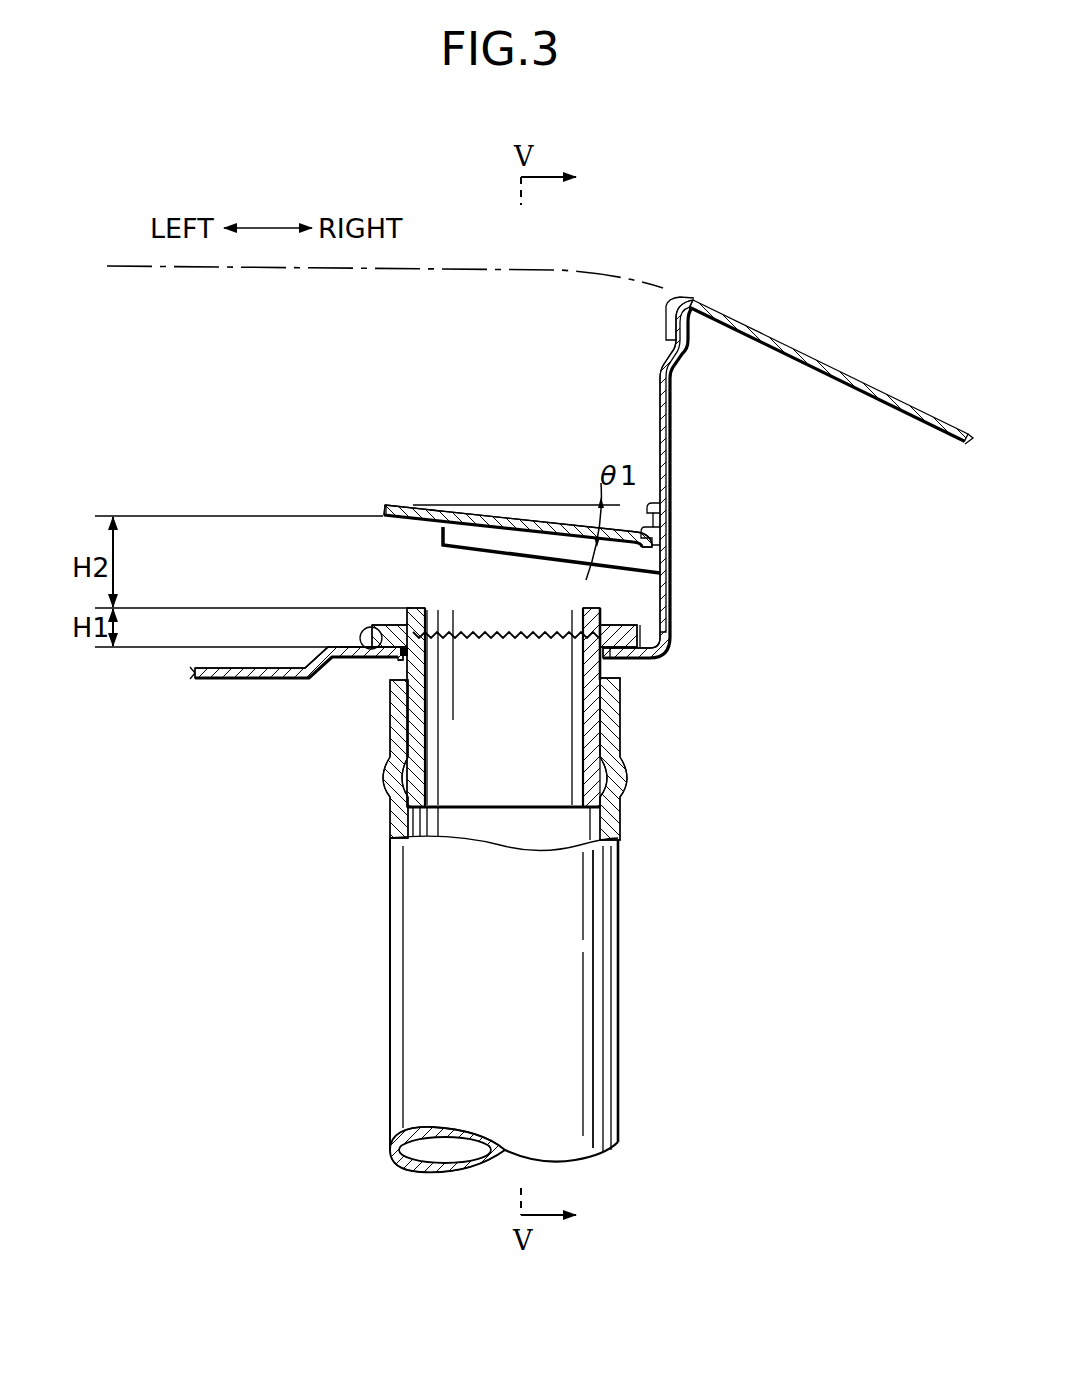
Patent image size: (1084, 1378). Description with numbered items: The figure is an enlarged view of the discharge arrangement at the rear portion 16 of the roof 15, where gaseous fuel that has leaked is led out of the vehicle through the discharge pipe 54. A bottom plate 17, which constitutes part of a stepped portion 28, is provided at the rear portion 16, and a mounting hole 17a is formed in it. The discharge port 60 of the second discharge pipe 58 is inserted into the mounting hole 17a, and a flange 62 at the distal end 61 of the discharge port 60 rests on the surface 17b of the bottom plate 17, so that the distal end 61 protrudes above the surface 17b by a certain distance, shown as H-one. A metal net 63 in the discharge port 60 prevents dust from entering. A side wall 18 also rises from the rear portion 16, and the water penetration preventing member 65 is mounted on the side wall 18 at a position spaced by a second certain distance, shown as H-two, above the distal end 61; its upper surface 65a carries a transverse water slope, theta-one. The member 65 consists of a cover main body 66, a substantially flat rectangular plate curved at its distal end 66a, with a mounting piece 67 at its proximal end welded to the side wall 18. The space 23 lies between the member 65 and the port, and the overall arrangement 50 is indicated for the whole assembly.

The roof 15 is at (461, 268).
The rear portion of the roof 16 is at (597, 276).
The bottom plate 17 is at (330, 650).
The mounting hole 17a is at (393, 727).
The surface of the bottom plate 17b is at (373, 658).
The side wall 18 is at (660, 410).
The space 23 is at (410, 553).
The stepped portion 28 is at (352, 634).
The filler pipe mounting structure 50 is at (243, 383).
The discharge pipe 54 is at (622, 1038).
The second discharge pipe 58 is at (619, 940).
The discharge port 60 is at (618, 668).
The distal end 61 is at (540, 603).
The flange 62 is at (650, 628).
The metal net 63 is at (500, 630).
The water penetration preventing member 65 is at (500, 506).
The upper surface of the water penetration preventing member 65a is at (557, 530).
The cover main body 66 is at (447, 507).
The distal end of the cover main body 66a is at (400, 505).
The mounting piece 67 is at (655, 510).